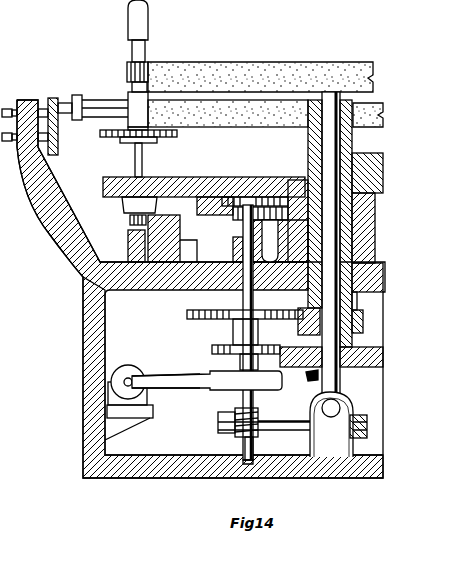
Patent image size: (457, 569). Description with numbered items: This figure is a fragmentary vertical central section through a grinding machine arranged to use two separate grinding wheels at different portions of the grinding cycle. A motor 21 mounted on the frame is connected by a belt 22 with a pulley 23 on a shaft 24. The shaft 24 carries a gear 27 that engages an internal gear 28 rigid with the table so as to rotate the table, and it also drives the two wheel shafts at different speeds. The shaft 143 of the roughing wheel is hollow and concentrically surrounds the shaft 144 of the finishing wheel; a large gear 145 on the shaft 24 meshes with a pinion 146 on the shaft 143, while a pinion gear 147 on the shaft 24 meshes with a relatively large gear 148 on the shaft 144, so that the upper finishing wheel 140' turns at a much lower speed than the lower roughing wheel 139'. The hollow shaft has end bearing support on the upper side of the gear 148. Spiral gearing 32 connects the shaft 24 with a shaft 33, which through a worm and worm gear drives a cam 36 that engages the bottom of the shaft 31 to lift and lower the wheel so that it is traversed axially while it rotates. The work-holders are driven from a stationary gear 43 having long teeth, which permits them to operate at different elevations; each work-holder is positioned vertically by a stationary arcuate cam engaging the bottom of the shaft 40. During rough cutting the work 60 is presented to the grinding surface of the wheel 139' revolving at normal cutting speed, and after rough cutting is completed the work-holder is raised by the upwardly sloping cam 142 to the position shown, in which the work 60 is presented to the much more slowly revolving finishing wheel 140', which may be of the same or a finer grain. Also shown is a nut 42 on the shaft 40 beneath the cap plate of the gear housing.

The work 60 is at (130, 72).
The finishing wheel 140' is at (260, 64).
The roughing wheel 139' is at (265, 125).
The gear 27 is at (250, 186).
The shaft of the roughing wheel 143 is at (352, 143).
The shaft 40 is at (135, 160).
The nut 42 is at (128, 220).
The stationary gear 43 is at (150, 245).
The cam 142 is at (125, 253).
The internal gear 28 is at (258, 238).
The shaft 31 is at (331, 243).
The shaft 24 is at (253, 303).
The pinion 146 is at (357, 322).
The large gear 145 is at (199, 320).
The pinion gear 147 is at (213, 350).
The motor 21 is at (126, 364).
The belt 22 is at (177, 389).
The pulley 23 is at (218, 387).
The spiral gearing 32 is at (222, 428).
The shaft 33 is at (278, 427).
The shaft of the finishing wheel 144 is at (320, 382).
The cam 36 is at (340, 408).
The large gear 148 is at (376, 368).